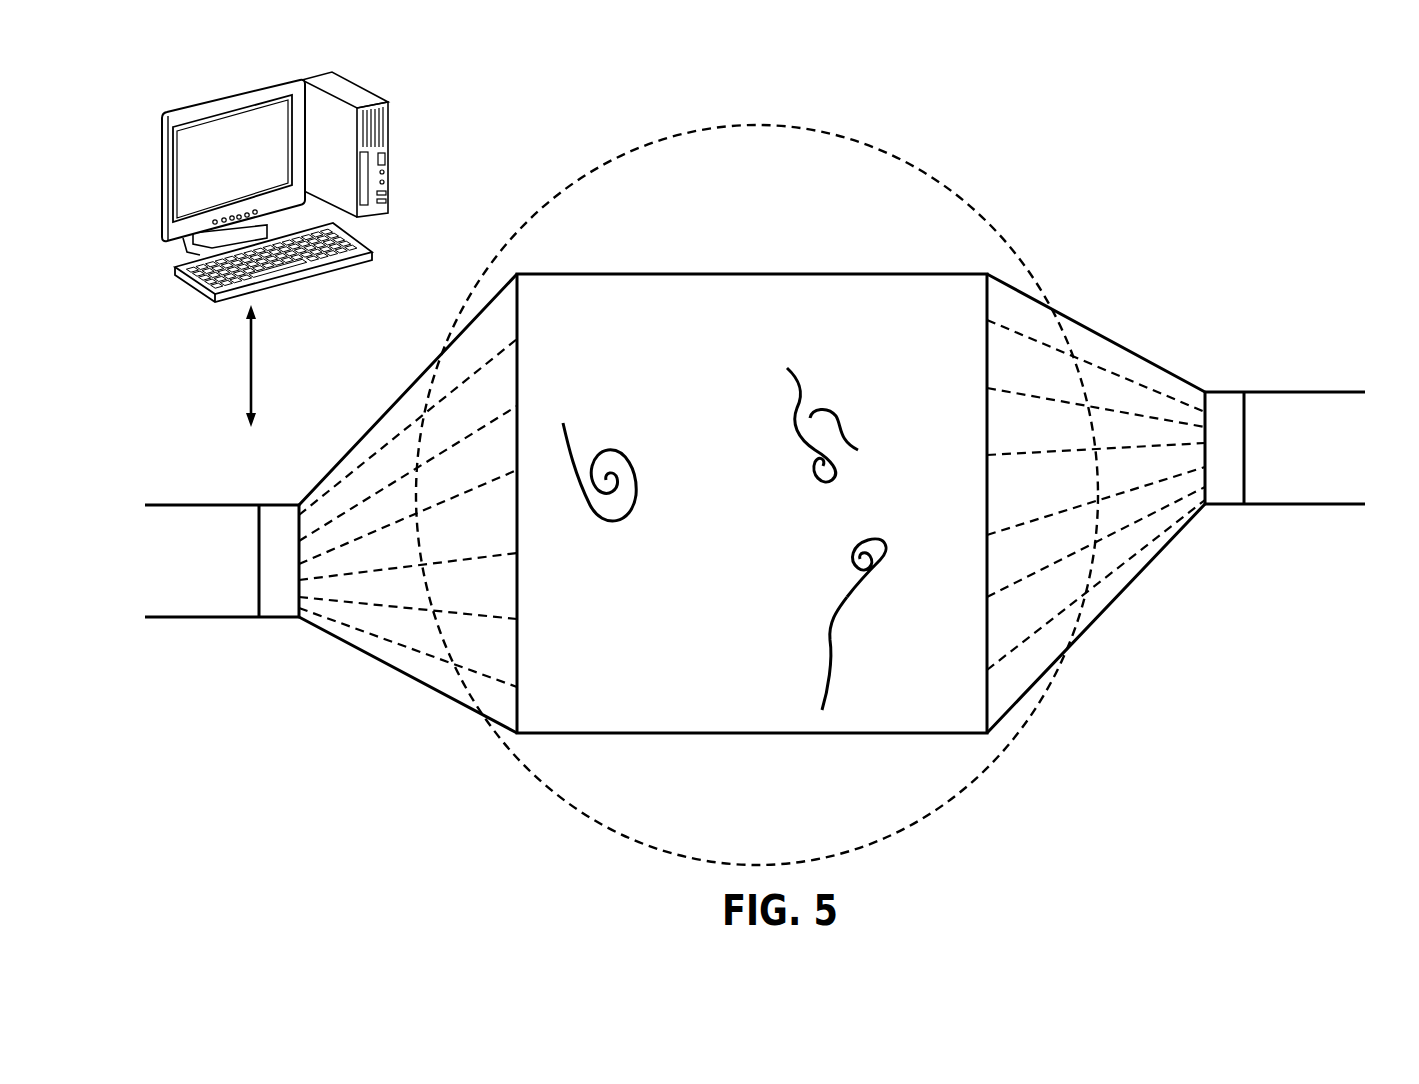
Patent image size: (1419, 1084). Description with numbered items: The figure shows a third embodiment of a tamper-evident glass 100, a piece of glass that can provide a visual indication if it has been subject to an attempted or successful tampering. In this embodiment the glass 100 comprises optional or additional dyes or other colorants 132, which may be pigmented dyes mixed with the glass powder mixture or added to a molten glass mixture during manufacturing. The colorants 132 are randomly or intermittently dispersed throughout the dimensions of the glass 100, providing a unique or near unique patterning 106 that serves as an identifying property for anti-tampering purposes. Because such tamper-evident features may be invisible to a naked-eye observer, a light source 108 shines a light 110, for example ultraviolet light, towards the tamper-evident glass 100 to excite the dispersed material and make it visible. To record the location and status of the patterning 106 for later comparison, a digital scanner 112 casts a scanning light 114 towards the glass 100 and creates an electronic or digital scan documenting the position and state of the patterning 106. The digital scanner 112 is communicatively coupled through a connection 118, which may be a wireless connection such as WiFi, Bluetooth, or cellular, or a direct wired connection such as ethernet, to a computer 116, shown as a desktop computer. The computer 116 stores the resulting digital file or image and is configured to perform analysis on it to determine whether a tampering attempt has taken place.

The tamper-evident glass 100 is at (1099, 166).
The patterning 106 is at (603, 447).
The light source 108 is at (1281, 480).
The light 110 is at (1120, 380).
The digital scanner 112 is at (201, 594).
The scanning light 114 is at (392, 587).
The computer 116 is at (390, 146).
The connection 118 is at (254, 376).
The colorants 132 is at (747, 352).